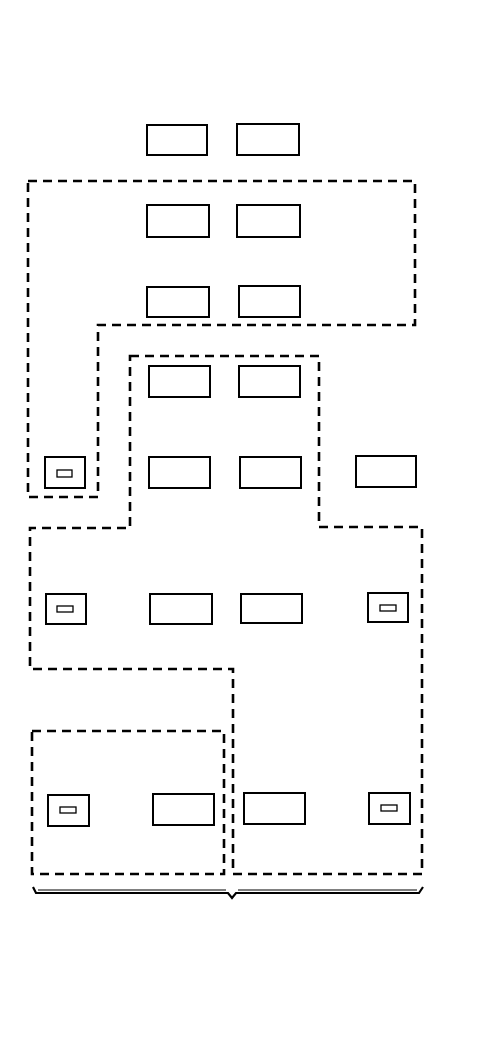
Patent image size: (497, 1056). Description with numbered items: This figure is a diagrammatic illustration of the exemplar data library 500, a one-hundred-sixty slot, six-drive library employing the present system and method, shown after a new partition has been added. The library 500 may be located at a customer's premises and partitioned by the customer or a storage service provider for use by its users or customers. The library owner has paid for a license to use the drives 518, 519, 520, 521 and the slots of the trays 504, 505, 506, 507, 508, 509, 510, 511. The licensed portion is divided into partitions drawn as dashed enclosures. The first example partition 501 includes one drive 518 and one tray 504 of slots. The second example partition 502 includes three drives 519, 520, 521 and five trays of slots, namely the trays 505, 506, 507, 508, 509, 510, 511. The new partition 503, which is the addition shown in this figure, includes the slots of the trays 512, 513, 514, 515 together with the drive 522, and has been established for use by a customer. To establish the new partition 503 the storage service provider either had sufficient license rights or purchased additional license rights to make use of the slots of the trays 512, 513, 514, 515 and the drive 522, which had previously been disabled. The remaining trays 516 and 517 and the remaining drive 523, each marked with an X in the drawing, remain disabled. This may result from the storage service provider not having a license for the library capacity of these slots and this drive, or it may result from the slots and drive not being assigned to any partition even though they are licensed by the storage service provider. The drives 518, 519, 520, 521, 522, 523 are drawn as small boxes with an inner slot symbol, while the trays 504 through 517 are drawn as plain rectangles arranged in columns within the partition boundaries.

The library 500 is at (190, 76).
The partition 501 is at (127, 731).
The second partition 502 is at (233, 698).
The new partition 503 is at (393, 178).
The tray 504 is at (183, 794).
The tray 505 is at (274, 793).
The tray 506 is at (180, 594).
The tray 507 is at (272, 594).
The tray 508 is at (186, 488).
The tray 509 is at (277, 457).
The tray 510 is at (168, 397).
The tray 511 is at (262, 397).
The tray 512 is at (147, 303).
The tray 513 is at (300, 302).
The tray 514 is at (147, 222).
The tray 515 is at (300, 222).
The tray 516 is at (147, 135).
The tray 517 is at (299, 140).
The drive 518 is at (67, 795).
The drive 519 is at (387, 793).
The drive 520 is at (66, 594).
The drive 521 is at (387, 593).
The drive 522 is at (65, 457).
The drive 523 is at (387, 456).